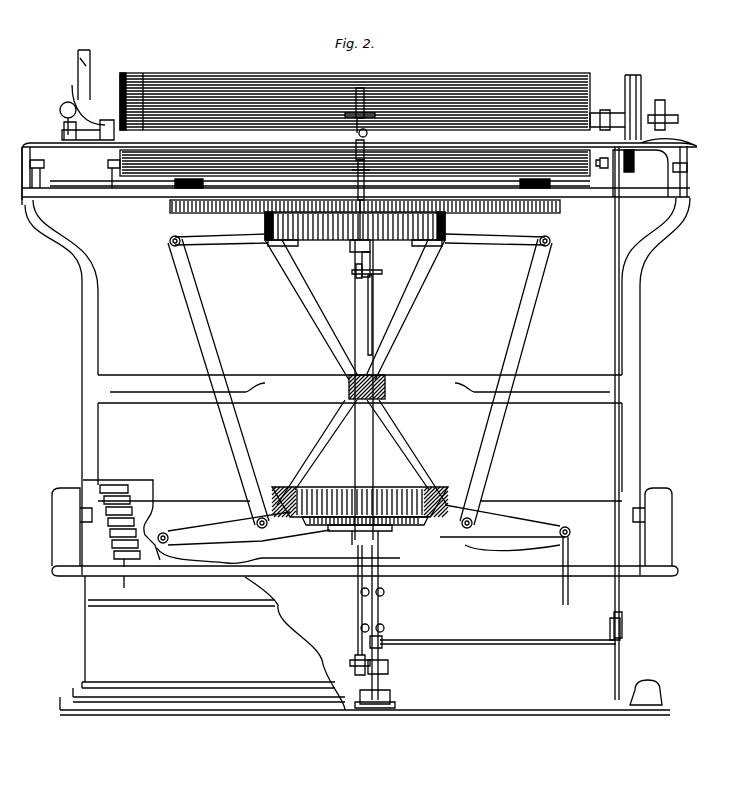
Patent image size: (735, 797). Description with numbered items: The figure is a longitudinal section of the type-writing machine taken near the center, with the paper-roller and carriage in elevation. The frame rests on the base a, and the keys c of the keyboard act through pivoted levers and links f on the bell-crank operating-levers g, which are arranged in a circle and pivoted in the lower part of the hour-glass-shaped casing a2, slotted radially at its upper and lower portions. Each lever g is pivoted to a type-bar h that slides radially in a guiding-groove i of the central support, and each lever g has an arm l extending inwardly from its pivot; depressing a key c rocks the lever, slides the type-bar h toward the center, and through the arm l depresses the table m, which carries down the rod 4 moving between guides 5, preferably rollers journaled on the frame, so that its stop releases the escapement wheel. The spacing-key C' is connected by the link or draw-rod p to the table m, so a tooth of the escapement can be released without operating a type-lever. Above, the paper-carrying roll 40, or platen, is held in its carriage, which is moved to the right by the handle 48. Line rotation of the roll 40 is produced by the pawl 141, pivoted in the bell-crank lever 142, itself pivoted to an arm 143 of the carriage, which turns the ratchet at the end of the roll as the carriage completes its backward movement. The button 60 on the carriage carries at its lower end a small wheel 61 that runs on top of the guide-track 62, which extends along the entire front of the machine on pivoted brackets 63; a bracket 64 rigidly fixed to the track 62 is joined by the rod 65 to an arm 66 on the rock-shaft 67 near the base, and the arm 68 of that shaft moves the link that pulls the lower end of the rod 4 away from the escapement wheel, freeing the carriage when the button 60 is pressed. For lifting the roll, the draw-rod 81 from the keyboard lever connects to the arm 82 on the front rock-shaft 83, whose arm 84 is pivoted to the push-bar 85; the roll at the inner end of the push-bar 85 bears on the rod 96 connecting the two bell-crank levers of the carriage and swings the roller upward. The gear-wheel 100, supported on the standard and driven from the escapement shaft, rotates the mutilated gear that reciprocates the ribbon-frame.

The paper-carrying roll 40 is at (440, 74).
The rod 96 is at (110, 160).
The pawl 141 is at (78, 70).
The bell-crank lever 142 is at (64, 128).
The arm of the carriage 143 is at (66, 106).
The button 60 is at (366, 112).
The small wheel 61 is at (355, 141).
The handle 48 is at (372, 138).
The guide-track 62 is at (708, 139).
The brackets 63 is at (688, 157).
The bracket 64 is at (618, 166).
The gear-wheel 100 is at (365, 211).
The push-bar 85 is at (338, 190).
The guiding-groove i is at (388, 240).
The type-bars h is at (505, 240).
The operating-levers g is at (232, 352).
The base a is at (323, 240).
The supporting frame or casing a2 is at (316, 462).
The arm or lever 84 is at (352, 258).
The arm 82 is at (372, 262).
The rock-shaft 83 is at (356, 274).
The draw-rod 81 is at (374, 326).
The arm l is at (363, 534).
The table m is at (365, 537).
The links f is at (558, 571).
The keys c is at (126, 490).
The escapement or spacing-key C' is at (359, 527).
The rod 4 is at (378, 610).
The link or draw-rod p is at (356, 628).
The guides 5 is at (384, 592).
The arm 68 is at (386, 658).
The rock-shaft 67 is at (614, 642).
The arm 66 is at (614, 622).
The rod 65 is at (615, 352).